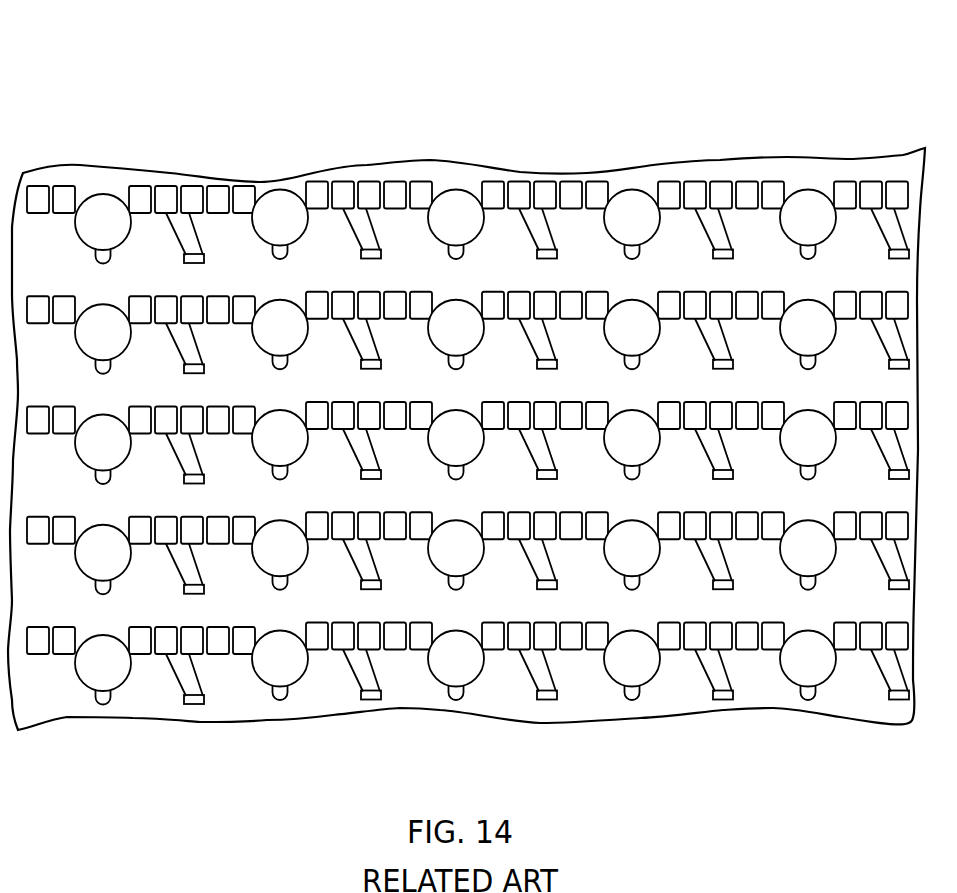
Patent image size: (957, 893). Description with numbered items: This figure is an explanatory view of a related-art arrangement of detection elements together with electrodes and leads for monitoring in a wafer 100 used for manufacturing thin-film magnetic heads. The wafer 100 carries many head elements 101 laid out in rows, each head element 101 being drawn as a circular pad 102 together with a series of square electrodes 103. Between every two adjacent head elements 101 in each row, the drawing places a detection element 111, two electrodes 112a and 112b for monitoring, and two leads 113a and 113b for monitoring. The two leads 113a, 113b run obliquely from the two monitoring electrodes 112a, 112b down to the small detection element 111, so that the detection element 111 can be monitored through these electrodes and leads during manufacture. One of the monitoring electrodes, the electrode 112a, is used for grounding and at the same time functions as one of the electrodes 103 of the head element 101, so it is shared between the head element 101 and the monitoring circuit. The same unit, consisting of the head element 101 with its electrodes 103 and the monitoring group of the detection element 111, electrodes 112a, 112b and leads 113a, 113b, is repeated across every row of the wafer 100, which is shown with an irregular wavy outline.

The wafer 100 is at (518, 726).
The head element 101 is at (367, 57).
The circular pad 102 is at (283, 189).
The electrode 103 is at (248, 184).
The detection element 111 is at (362, 259).
The electrode for monitoring 112a is at (340, 181).
The electrode for monitoring 112b is at (367, 181).
The lead for monitoring 113a is at (358, 240).
The lead for monitoring 113b is at (374, 228).